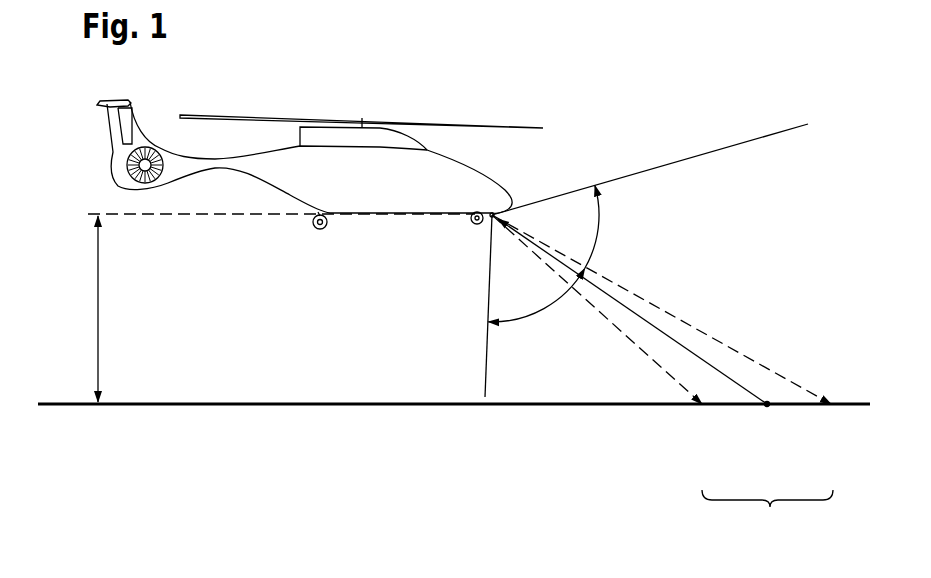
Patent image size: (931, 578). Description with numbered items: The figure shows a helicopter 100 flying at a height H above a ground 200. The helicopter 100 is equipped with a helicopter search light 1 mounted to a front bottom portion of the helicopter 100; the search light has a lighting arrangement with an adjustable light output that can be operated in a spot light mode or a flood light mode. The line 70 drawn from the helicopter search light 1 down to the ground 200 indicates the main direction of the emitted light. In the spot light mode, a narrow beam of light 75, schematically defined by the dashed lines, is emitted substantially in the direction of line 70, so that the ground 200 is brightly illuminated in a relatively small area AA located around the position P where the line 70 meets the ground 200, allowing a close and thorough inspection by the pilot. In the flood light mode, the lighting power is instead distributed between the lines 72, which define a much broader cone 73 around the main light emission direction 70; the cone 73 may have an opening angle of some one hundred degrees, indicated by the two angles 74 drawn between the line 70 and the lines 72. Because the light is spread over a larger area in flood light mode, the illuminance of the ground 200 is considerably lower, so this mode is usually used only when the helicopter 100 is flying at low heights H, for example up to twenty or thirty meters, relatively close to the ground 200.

The helicopter search light 1 is at (490, 218).
The line indicating main light emission direction 70 is at (675, 342).
The lines defining the cone 72 is at (703, 153).
The cone 73 is at (627, 158).
The angles 74 is at (598, 233).
The narrow beam of light 75 is at (777, 348).
The helicopter 100 is at (350, 256).
The ground 200 is at (278, 406).
The height H is at (98, 308).
The position P is at (767, 408).
The area AA is at (767, 518).